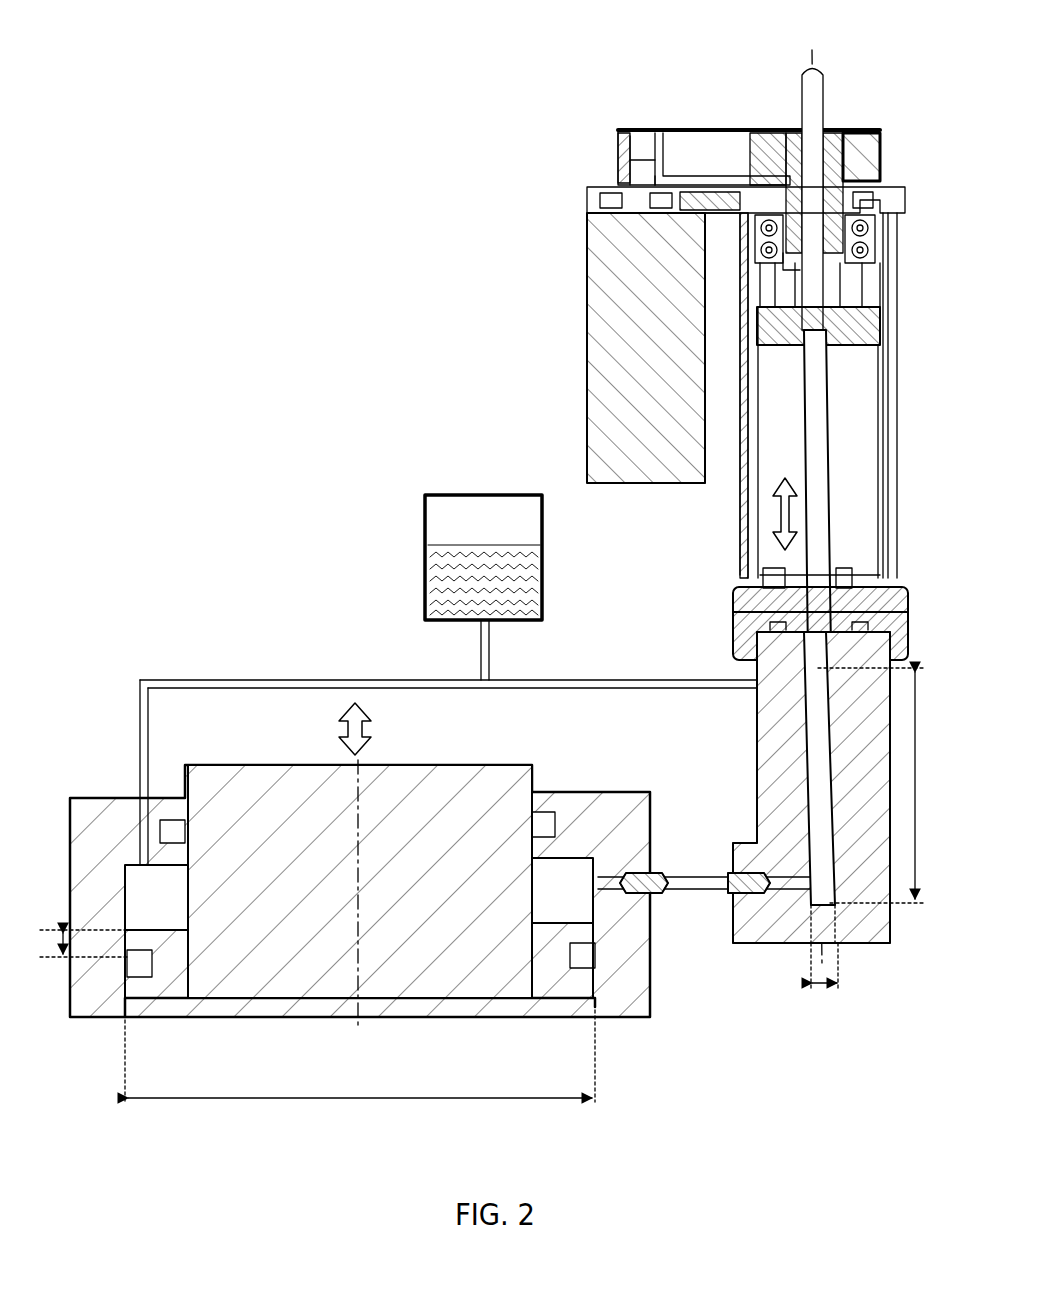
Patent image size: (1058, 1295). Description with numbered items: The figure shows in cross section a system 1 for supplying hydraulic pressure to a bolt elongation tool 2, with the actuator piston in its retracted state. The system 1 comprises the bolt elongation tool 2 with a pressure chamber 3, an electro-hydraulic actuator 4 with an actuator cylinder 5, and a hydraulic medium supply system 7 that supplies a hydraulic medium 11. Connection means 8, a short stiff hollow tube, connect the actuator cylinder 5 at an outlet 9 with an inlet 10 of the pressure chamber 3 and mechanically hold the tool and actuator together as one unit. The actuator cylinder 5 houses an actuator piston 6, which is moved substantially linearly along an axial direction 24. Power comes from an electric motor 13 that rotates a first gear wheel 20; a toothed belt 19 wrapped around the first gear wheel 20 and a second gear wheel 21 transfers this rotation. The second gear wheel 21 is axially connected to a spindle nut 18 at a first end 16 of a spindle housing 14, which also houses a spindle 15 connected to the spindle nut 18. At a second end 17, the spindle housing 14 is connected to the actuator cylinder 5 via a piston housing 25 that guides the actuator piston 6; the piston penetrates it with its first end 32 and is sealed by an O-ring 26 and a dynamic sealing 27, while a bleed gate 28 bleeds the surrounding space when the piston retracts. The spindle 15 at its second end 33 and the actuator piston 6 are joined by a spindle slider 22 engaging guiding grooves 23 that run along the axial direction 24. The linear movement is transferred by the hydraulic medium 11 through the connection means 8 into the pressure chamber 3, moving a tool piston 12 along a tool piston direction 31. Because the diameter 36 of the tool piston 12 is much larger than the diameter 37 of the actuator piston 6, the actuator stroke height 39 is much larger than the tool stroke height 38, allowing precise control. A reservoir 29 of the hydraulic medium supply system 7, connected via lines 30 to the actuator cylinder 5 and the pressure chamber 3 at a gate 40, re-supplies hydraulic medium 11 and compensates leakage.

The system 1 is at (185, 68).
The bolt elongation tool 2 is at (552, 758).
The pressure chamber 3 is at (155, 900).
The electro-hydraulic actuator 4 is at (724, 92).
The actuator cylinder 5 is at (790, 775).
The actuator piston 6 is at (828, 455).
The hydraulic medium supply system 7 is at (395, 602).
The connection means 8 is at (693, 887).
The outlet 9 is at (730, 868).
The inlet 10 is at (650, 872).
The hydraulic medium 11 is at (455, 573).
The tool piston 12 is at (393, 940).
The electric motor 13 is at (620, 300).
The spindle housing 14 is at (890, 538).
The spindle 15 is at (828, 107).
The first end 16 is at (884, 186).
The second end 17 is at (728, 580).
The spindle nut 18 is at (840, 275).
The toothed belt 19 is at (683, 148).
The first gear wheel 20 is at (643, 166).
The second gear wheel 21 is at (768, 148).
The spindle slider 22 is at (850, 325).
The guiding grooves 23 is at (752, 500).
The axial direction 24 is at (780, 518).
The piston housing 25 is at (745, 640).
The O-ring 26 is at (846, 575).
The dynamic sealing 27 is at (846, 637).
The bleed gate 28 is at (730, 612).
The reservoir 29 is at (508, 495).
The lines 30 is at (195, 680).
The tool piston direction 31 is at (340, 729).
The first end of the actuator piston 32 is at (834, 347).
The second end of the spindle 33 is at (858, 300).
The diameter of the tool piston 36 is at (360, 1071).
The diameter of the actuator piston 37 is at (824, 983).
The tool stroke height 38 is at (80, 941).
The actuator stroke height 39 is at (880, 785).
The gate 40 is at (750, 686).